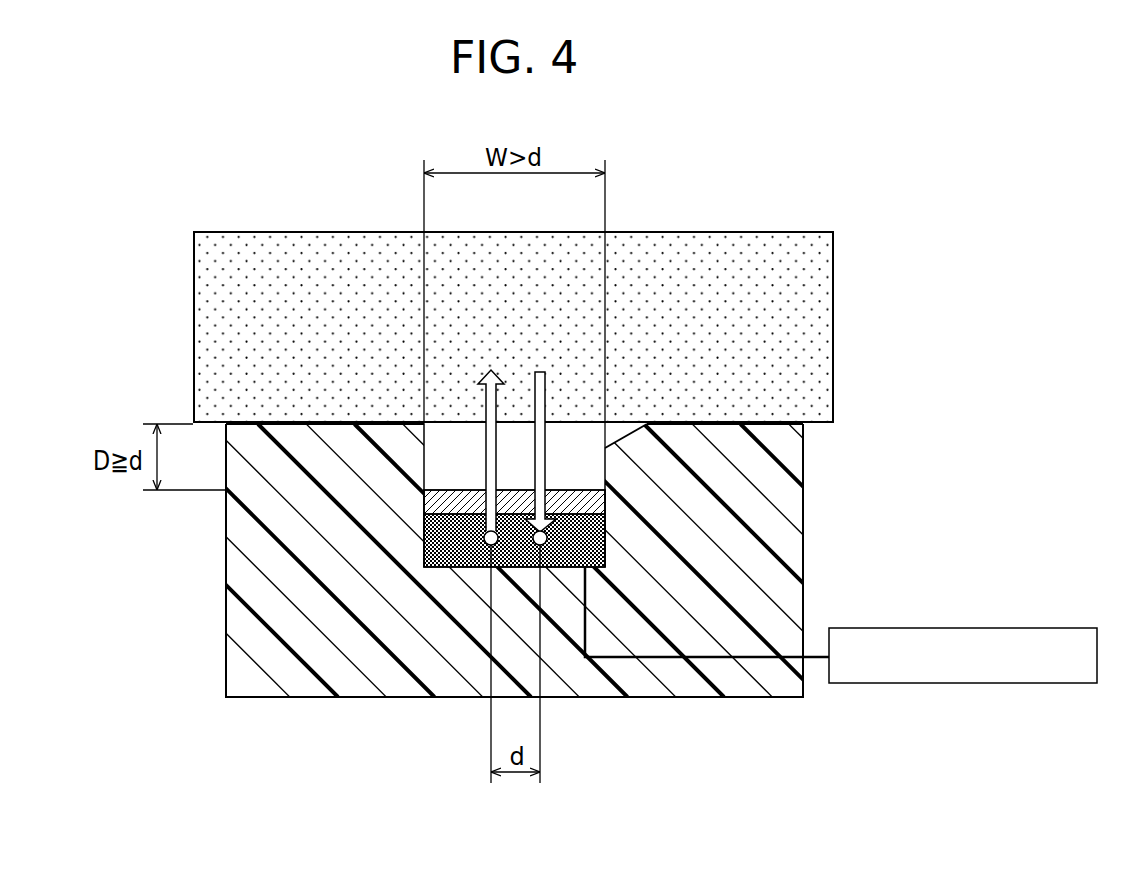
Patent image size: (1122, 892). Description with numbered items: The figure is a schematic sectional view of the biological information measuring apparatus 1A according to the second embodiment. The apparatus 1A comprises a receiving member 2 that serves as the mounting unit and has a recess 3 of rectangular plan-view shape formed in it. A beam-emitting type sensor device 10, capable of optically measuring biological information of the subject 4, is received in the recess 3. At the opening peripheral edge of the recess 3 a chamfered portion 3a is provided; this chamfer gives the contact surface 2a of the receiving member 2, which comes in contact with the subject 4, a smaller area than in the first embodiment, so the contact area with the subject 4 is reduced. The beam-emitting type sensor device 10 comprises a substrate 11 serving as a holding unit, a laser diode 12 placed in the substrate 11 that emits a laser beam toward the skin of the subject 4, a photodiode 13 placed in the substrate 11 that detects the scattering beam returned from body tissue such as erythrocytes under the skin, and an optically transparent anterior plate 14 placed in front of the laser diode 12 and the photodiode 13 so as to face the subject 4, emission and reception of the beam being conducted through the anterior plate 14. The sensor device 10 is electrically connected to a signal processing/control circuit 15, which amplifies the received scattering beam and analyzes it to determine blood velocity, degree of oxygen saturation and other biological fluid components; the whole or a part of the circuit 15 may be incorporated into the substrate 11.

The biological information measuring apparatus 1A is at (539, 491).
The receiving member 2 is at (795, 512).
The contact surface 2a is at (763, 418).
The recess 3 is at (424, 459).
The chamfered portion 3a is at (628, 423).
The subject 4 is at (823, 318).
The beam-emitting type sensor device 10 is at (423, 557).
The substrate 11 is at (435, 538).
The laser diode 12 is at (488, 545).
The photodiode 13 is at (548, 545).
The anterior plate 14 is at (600, 503).
The signal processing/control circuit 15 is at (933, 628).